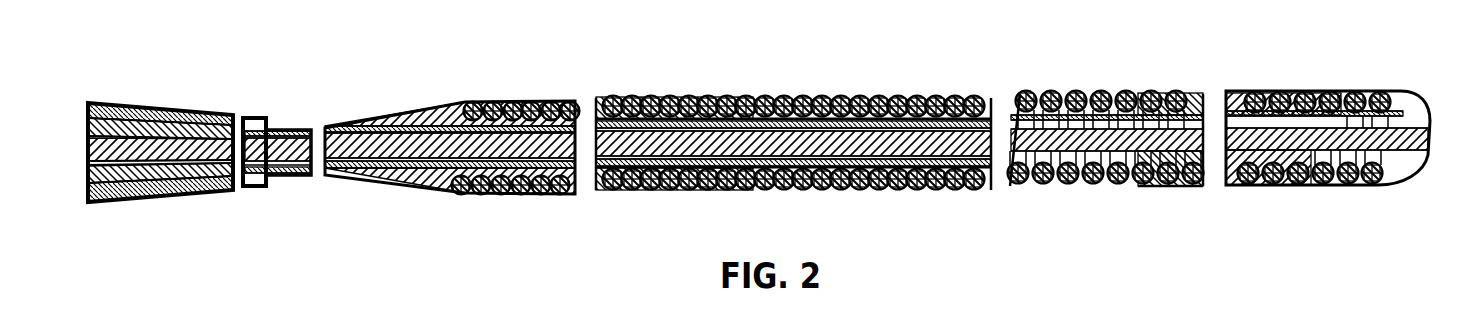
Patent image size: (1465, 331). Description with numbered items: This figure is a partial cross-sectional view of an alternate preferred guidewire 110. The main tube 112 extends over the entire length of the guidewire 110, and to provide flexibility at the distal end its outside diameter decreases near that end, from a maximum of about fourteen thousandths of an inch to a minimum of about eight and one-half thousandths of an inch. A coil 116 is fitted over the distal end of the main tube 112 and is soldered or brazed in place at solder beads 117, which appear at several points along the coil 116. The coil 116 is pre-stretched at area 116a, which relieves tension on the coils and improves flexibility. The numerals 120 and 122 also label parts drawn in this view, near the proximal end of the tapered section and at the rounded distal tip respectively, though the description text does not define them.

The guidewire 110 is at (771, 123).
The main tube 112 is at (265, 118).
The coil 116 is at (566, 100).
The pre-stretched area 116a is at (1121, 185).
The solder beads 117 is at (423, 108).
The core wire 120 is at (337, 142).
The distal tip 122 is at (1400, 85).